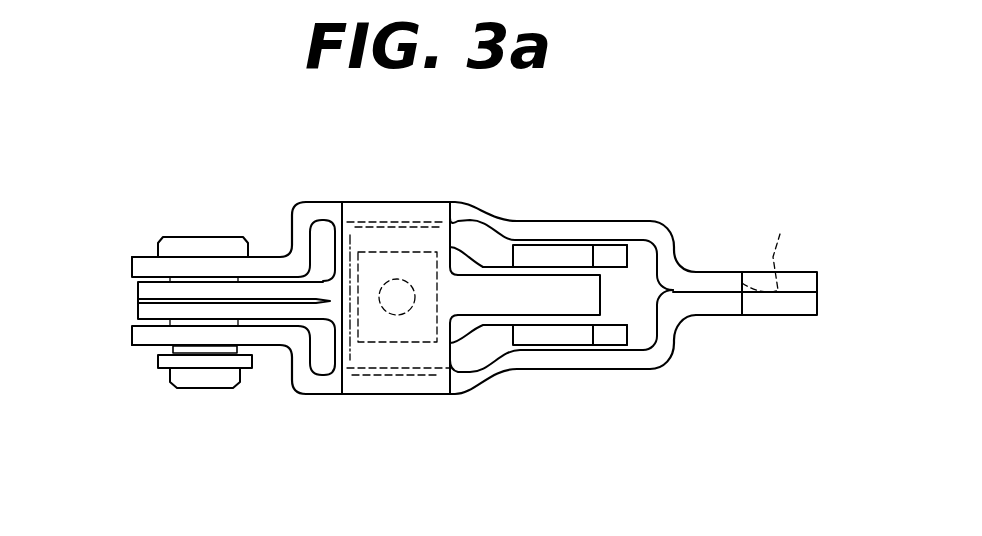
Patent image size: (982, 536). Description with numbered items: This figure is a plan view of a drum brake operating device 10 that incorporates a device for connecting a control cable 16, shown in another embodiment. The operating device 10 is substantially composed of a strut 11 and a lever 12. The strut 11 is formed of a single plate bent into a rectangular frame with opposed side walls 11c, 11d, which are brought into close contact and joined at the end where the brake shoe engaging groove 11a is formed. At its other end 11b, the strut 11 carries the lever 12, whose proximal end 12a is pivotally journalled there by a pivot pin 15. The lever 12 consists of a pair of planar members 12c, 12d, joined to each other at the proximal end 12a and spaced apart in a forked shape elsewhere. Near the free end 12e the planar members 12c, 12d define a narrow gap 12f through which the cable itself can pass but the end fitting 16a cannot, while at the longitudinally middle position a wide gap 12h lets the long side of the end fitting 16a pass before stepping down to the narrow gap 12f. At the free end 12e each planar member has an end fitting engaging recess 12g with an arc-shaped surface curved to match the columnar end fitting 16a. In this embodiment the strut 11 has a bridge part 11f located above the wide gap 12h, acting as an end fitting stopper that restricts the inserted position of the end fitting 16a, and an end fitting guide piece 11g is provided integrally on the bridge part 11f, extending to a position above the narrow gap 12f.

The drum brake operating device 10 is at (138, 374).
The strut 11 is at (691, 348).
The brake shoe engaging groove 11a is at (780, 234).
The other end of the strut 11b is at (132, 265).
The side wall 11c is at (668, 250).
The side wall 11d is at (625, 366).
The bridge part 11f is at (337, 262).
The end fitting guide piece 11g is at (574, 310).
The lever 12 is at (321, 345).
The proximal end of the lever 12a is at (137, 307).
The planar member 12c is at (483, 255).
The planar member 12d is at (480, 338).
The free end of the lever 12e is at (627, 257).
The narrow gap 12f is at (612, 298).
The end fitting engaging recess 12g is at (573, 248).
The wide gap 12h is at (483, 252).
The pivot pin 15 is at (203, 388).
The control cable 16 is at (384, 330).
The end fitting 16a is at (412, 345).